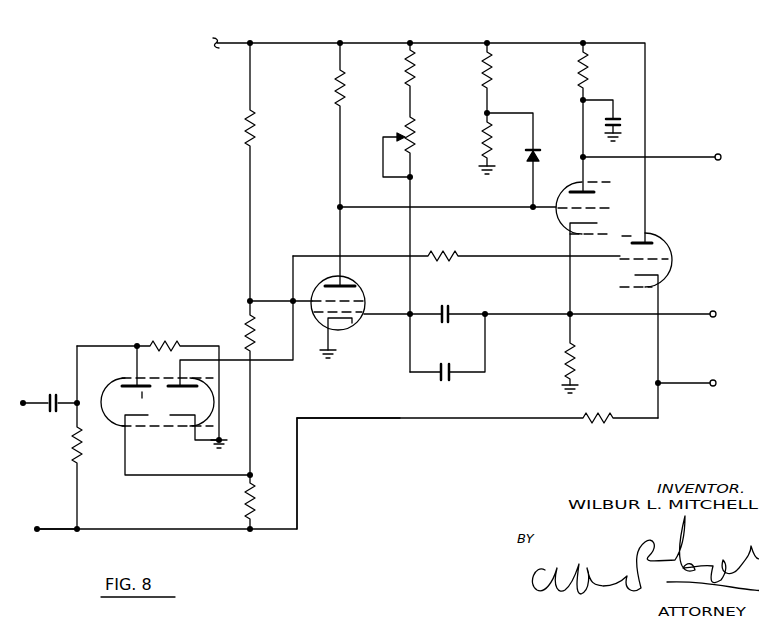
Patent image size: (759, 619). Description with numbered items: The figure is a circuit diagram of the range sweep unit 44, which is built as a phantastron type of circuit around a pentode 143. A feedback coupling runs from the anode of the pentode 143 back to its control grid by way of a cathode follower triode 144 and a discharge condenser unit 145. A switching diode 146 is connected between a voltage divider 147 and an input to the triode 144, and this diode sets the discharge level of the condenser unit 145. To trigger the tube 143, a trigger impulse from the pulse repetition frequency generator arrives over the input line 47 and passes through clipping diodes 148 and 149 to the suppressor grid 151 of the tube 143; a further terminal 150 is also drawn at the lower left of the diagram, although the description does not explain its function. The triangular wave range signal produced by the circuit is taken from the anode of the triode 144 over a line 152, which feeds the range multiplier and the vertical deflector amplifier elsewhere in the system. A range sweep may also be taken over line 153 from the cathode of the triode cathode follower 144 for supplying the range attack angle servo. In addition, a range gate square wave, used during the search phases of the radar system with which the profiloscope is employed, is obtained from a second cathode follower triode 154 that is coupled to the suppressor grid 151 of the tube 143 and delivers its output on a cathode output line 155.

The range sweep unit 44 is at (365, 392).
The input line 47 is at (24, 406).
The pentode 143 is at (358, 283).
The cathode follower triode 144 is at (563, 218).
The discharge condenser unit 145 is at (448, 306).
The switching diode 146 is at (530, 163).
The voltage divider 147 is at (487, 113).
The clipping diode 148 is at (142, 398).
The clipping diode 149 is at (203, 397).
The negative supply terminal 150 is at (8, 550).
The suppressor grid 151 is at (355, 297).
The line 152 is at (676, 157).
The line 153 is at (687, 313).
The cathode follower triode 154 is at (660, 253).
The cathode output line 155 is at (684, 385).